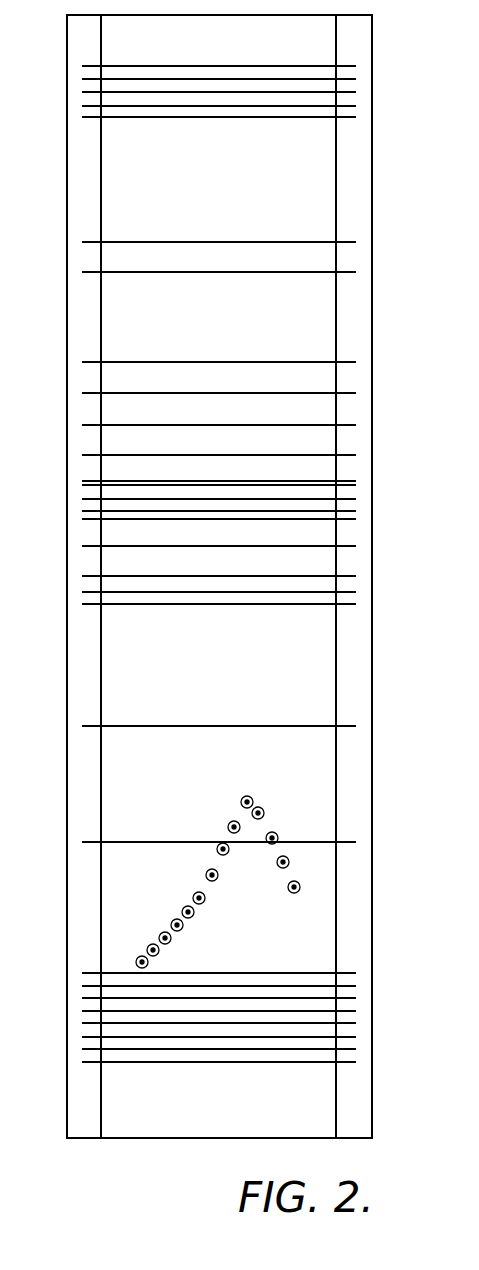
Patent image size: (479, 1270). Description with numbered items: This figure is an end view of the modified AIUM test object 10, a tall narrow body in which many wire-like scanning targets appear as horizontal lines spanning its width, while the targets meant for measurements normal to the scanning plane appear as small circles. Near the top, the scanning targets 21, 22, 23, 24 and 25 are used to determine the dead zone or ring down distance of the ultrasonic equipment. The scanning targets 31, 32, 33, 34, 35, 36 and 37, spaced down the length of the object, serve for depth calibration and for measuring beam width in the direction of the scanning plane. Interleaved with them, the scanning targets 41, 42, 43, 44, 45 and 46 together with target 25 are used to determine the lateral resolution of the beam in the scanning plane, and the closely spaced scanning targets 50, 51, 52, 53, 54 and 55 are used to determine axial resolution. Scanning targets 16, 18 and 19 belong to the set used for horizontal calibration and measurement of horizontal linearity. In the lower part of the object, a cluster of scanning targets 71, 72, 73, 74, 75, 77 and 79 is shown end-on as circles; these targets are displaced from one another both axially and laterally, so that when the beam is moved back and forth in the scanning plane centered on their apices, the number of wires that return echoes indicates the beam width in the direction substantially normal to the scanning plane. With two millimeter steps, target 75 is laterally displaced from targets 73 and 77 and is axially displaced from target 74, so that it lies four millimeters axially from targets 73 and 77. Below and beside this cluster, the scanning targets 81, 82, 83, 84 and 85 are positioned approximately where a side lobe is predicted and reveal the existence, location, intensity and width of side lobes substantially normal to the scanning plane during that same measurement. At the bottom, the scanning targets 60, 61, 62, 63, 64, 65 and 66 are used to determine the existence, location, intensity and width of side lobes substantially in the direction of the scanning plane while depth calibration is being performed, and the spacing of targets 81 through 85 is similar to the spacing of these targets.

The modified AIUM test object 10 is at (66, 149).
The scanning target 21 is at (138, 66).
The scanning target 22 is at (165, 79).
The scanning target 23 is at (193, 92).
The scanning target 24 is at (227, 106).
The scanning target 25 is at (255, 117).
The scanning target 31 is at (316, 61).
The scanning target 32 is at (208, 242).
The scanning target 41 is at (247, 272).
The scanning target 33 is at (177, 362).
The scanning target 42 is at (226, 393).
The scanning target 50 is at (220, 425).
The scanning target 51 is at (228, 455).
The scanning target 52 is at (259, 500).
The scanning target 53 is at (274, 479).
The scanning target 54 is at (227, 519).
The scanning target 55 is at (271, 520).
The scanning target 43 is at (137, 484).
The scanning target 34 is at (178, 475).
The scanning target 44 is at (180, 541).
The scanning target 45 is at (222, 572).
The scanning target 46 is at (268, 558).
The scanning target 35 is at (238, 604).
The scanning target 36 is at (212, 726).
The scanning target 37 is at (138, 842).
The scanning target 71 is at (247, 796).
The scanning target 72 is at (258, 807).
The scanning target 73 is at (234, 821).
The scanning target 74 is at (272, 832).
The scanning target 75 is at (223, 843).
The scanning target 77 is at (212, 869).
The scanning target 79 is at (205, 857).
The scanning target 16 is at (283, 856).
The scanning target 18 is at (294, 881).
The scanning target 19 is at (292, 950).
The scanning target 81 is at (204, 910).
The scanning target 82 is at (193, 924).
The scanning target 83 is at (182, 939).
The scanning target 84 is at (168, 952).
The scanning target 85 is at (166, 960).
The scanning target 60 is at (345, 988).
The scanning target 61 is at (343, 997).
The scanning target 62 is at (350, 1008).
The scanning target 63 is at (348, 1022).
The scanning target 64 is at (347, 1035).
The scanning target 65 is at (350, 1048).
The scanning target 66 is at (343, 1062).